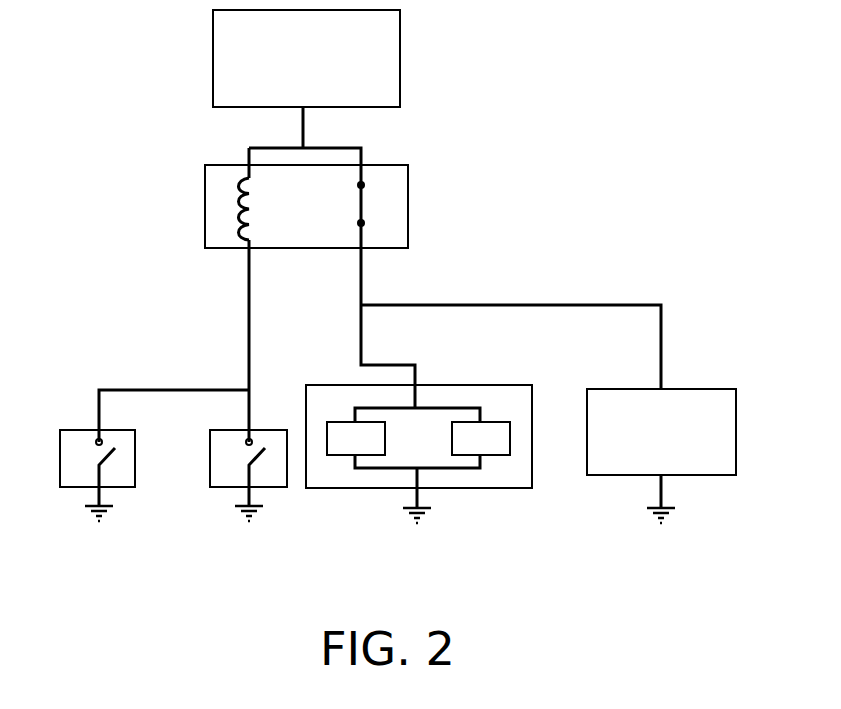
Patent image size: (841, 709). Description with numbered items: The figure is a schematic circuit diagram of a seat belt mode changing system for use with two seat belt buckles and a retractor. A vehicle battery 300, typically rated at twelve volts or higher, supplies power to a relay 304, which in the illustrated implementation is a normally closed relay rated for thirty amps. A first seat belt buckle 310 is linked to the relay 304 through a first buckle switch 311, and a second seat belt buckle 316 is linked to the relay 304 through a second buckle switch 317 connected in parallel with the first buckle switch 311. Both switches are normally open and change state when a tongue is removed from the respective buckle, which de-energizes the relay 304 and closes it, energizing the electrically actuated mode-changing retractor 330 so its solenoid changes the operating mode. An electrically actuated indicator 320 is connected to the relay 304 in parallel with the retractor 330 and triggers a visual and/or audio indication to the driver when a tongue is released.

The vehicle battery 300 is at (400, 61).
The relay 304 is at (408, 199).
The first seat belt buckle 310 is at (105, 498).
The first buckle switch 311 is at (117, 461).
The second seat belt buckle 316 is at (256, 498).
The second buckle switch 317 is at (268, 462).
The indicator 320 is at (473, 383).
The retractor 330 is at (690, 389).